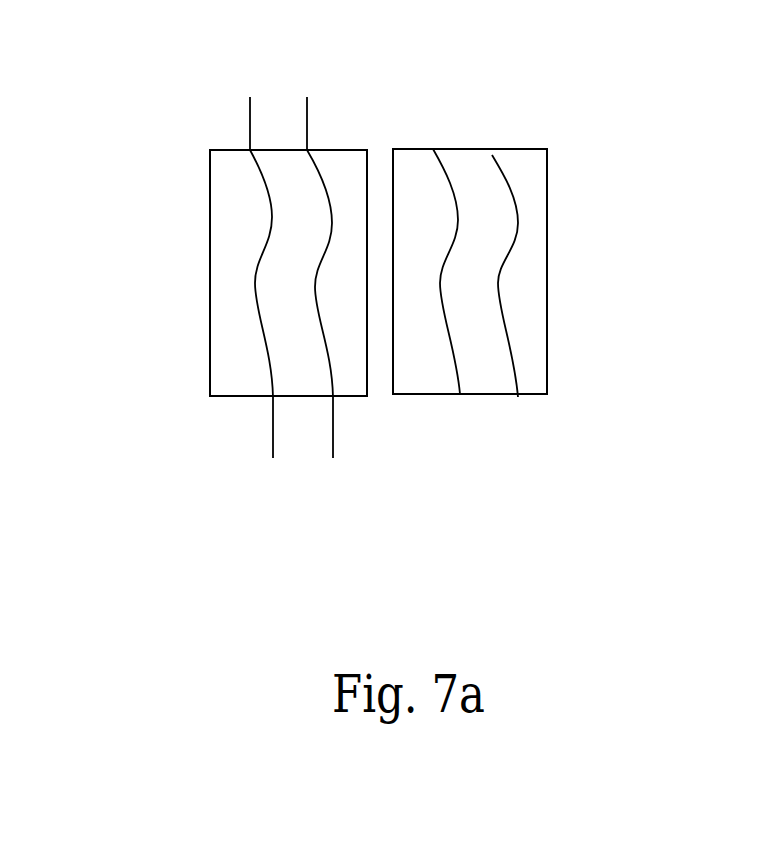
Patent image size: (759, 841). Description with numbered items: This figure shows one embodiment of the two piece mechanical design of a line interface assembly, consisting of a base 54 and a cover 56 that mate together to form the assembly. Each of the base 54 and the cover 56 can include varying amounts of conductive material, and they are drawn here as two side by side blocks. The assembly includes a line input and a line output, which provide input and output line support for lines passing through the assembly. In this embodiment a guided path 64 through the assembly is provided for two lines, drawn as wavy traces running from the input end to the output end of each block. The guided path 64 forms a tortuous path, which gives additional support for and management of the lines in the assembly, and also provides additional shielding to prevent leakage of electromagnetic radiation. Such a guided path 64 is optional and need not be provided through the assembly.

The base 54 is at (230, 162).
The cover 56 is at (547, 148).
The guided path 64 is at (535, 360).